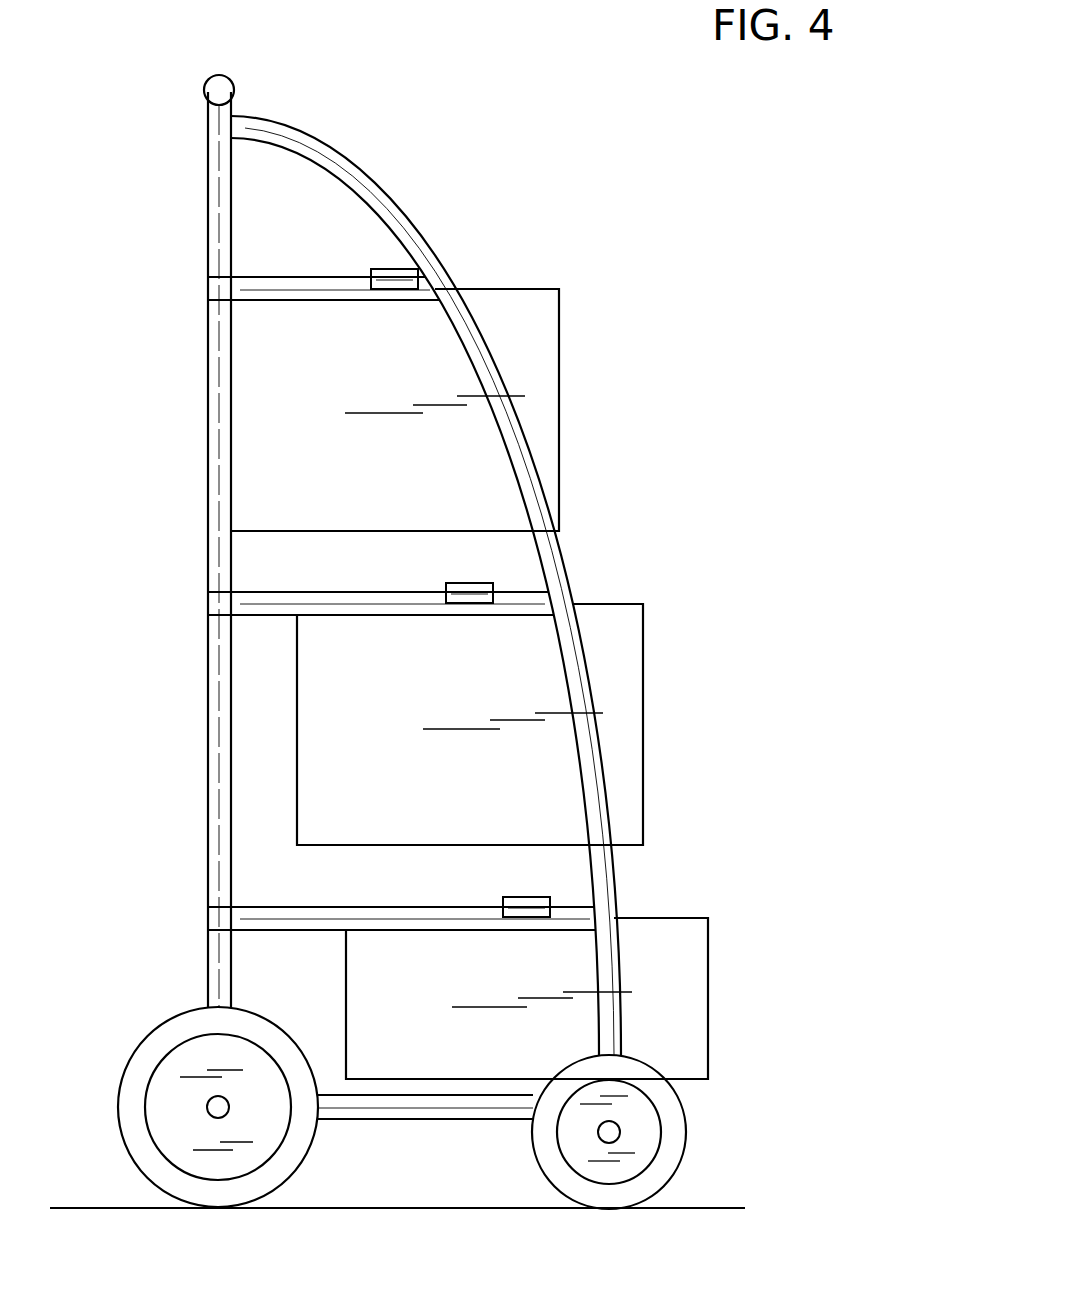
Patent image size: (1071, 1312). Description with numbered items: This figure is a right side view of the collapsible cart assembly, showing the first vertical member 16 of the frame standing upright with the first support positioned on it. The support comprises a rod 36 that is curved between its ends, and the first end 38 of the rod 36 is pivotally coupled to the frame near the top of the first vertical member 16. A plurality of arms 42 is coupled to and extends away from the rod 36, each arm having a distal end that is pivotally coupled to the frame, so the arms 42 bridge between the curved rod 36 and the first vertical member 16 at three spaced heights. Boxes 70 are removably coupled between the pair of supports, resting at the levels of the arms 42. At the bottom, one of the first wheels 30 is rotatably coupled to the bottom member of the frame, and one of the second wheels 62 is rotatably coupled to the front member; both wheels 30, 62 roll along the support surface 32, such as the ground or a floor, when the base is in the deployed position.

The first vertical member 16 is at (207, 221).
The first end of the rod 38 is at (231, 128).
The rod 36 is at (413, 230).
The arms 42 is at (327, 277).
The boxes 70 is at (559, 350).
The first wheels 30 is at (170, 1017).
The second wheels 62 is at (688, 1122).
The support surface 32 is at (722, 1207).